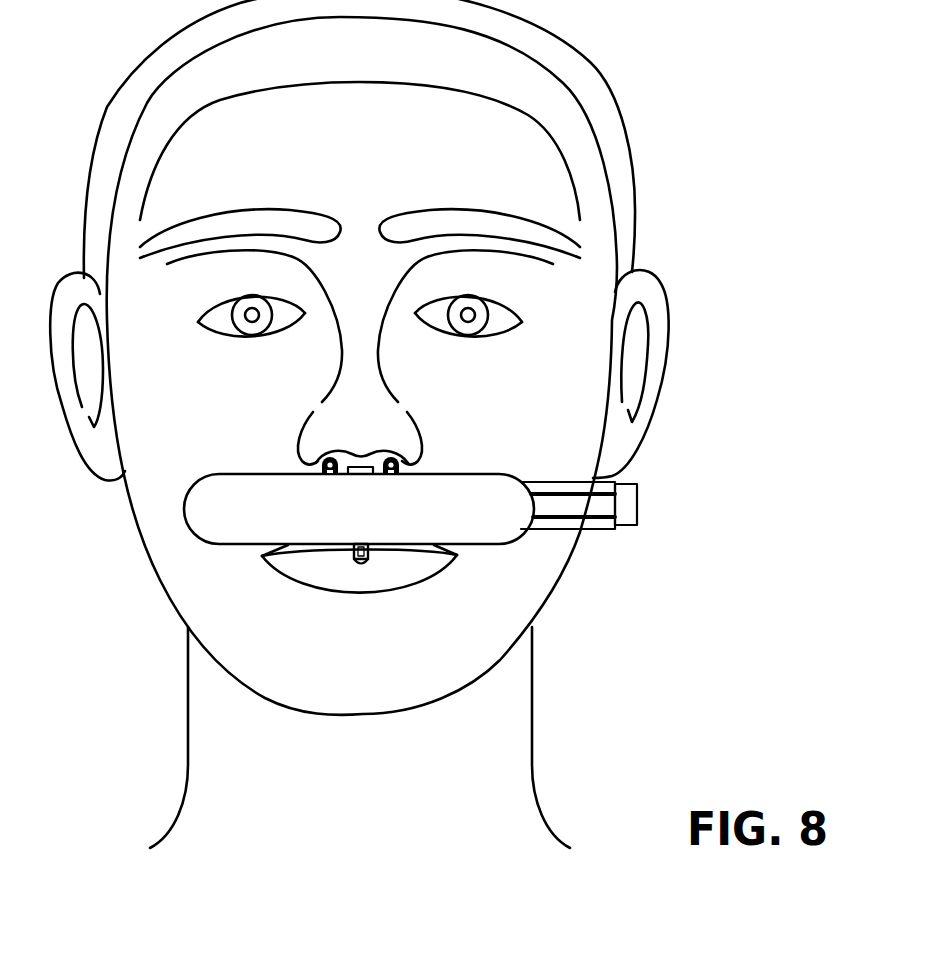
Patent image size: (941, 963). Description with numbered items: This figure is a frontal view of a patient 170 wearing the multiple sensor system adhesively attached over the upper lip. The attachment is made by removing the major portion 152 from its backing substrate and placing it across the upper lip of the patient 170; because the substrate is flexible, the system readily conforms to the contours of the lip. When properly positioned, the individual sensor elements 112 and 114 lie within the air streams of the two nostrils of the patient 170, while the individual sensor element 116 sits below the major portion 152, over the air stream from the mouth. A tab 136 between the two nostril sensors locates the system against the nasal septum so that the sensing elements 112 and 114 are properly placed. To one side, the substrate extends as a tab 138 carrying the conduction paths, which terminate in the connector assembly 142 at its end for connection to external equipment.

The individual sensor element 112 is at (315, 460).
The individual sensor element 114 is at (405, 460).
The individual sensor element 116 is at (357, 564).
The tab 136 is at (362, 470).
The tab 138 is at (595, 531).
The connector assembly 142 is at (630, 505).
The major portion 152 is at (500, 543).
The patient 170 is at (733, 123).